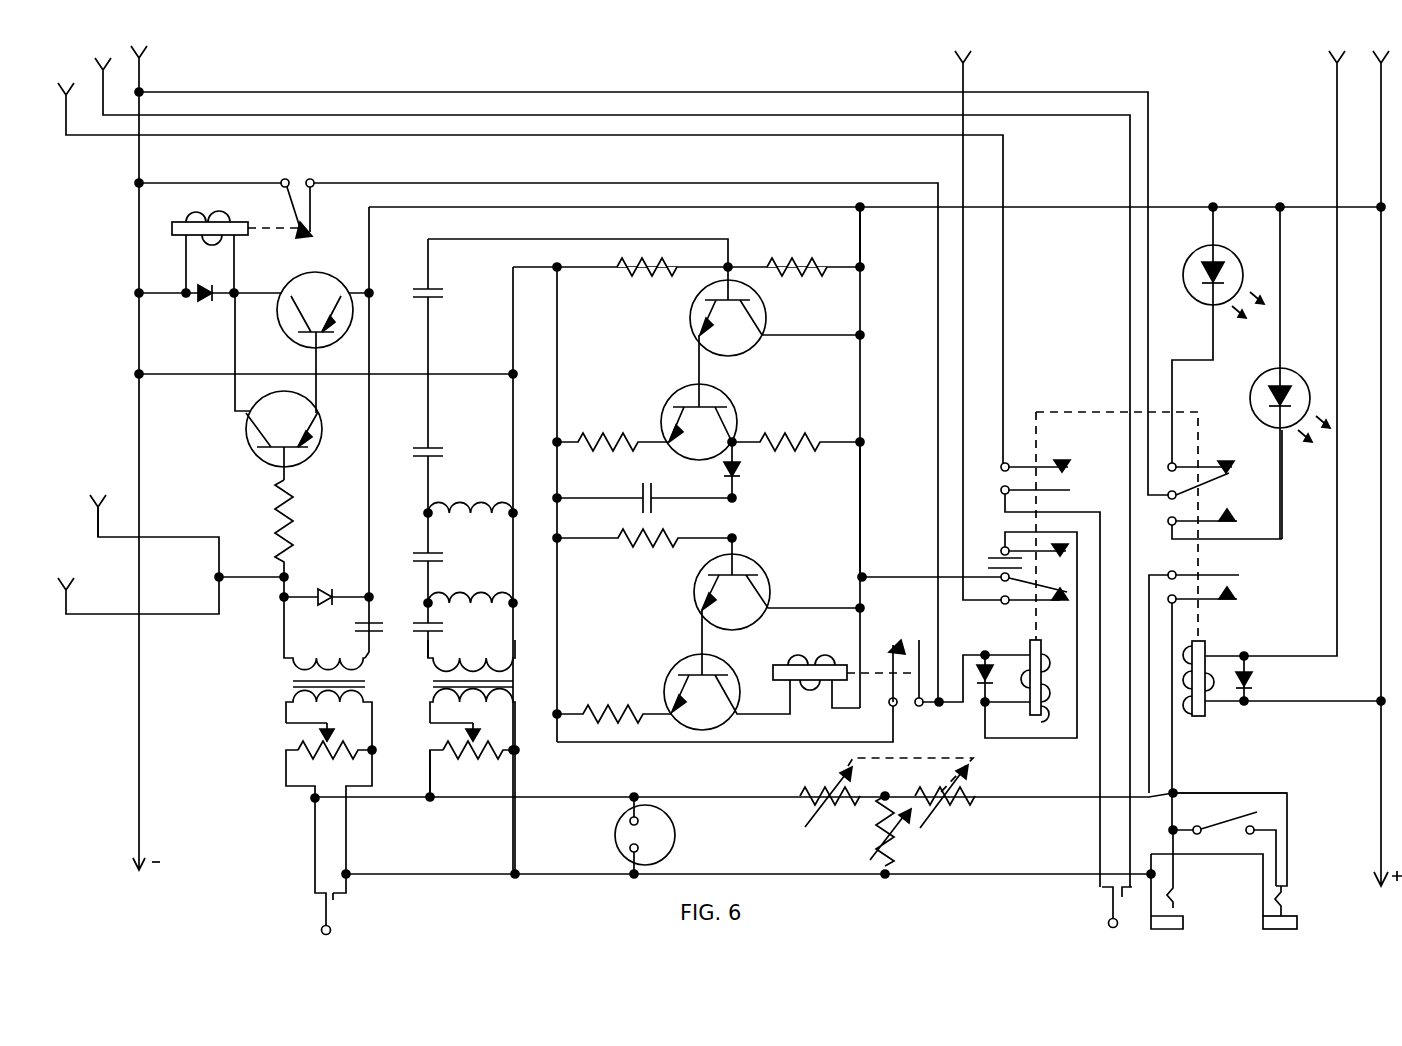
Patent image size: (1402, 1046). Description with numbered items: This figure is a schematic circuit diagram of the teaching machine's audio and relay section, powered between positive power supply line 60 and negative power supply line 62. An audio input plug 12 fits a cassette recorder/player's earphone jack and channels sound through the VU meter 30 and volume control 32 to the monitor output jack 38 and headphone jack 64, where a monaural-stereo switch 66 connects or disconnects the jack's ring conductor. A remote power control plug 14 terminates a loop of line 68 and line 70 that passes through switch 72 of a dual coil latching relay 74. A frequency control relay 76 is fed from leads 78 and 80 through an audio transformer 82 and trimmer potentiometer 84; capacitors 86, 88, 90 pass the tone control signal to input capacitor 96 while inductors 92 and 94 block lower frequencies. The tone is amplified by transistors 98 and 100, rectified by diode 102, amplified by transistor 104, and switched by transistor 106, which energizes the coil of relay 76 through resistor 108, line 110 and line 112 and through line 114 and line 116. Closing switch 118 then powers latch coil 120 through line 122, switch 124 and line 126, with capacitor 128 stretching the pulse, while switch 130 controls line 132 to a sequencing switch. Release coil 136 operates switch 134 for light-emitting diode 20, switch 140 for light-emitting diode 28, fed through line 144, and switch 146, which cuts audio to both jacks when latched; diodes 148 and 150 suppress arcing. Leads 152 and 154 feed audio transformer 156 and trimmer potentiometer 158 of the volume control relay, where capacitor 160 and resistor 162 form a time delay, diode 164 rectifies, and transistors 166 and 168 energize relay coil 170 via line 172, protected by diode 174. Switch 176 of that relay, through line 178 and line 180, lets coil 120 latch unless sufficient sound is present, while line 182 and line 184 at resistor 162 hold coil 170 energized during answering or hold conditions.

The audio input plug 12 is at (324, 918).
The remote power control plug 14 is at (1108, 910).
The light-emitting diode 20 is at (1220, 248).
The light-emitting diode 28 is at (1282, 370).
The VU meter 30 is at (614, 836).
The volume control 32 is at (836, 832).
The monitor output jack 38 is at (1180, 894).
The positive power supply line 60 is at (1382, 462).
The negative power supply line 62 is at (143, 467).
The headphone jack 64 is at (1295, 882).
The monaural-stereo switch 66 is at (1238, 816).
The line 68 is at (1130, 286).
The line 70 is at (1100, 842).
The switch 72 is at (1060, 474).
The dual coil latching relay 74 is at (1103, 388).
The frequency control relay 76 is at (806, 732).
The lead 78 is at (427, 760).
The lead 80 is at (515, 839).
The audio transformer 82 is at (425, 686).
The trimmer potentiometer 84 is at (430, 735).
The capacitor 86 is at (418, 618).
The capacitor 88 is at (418, 546).
The capacitor 90 is at (418, 438).
The inductor 92 is at (489, 586).
The inductor 94 is at (487, 498).
The input capacitor 96 is at (420, 308).
The transistor 98 is at (690, 312).
The transistor 100 is at (666, 400).
The diode 102 is at (744, 476).
The transistor 104 is at (761, 562).
The transistor 106 is at (716, 668).
The resistor 108 is at (627, 704).
The line 110 is at (557, 614).
The line 112 is at (500, 354).
The line 114 is at (864, 476).
The line 116 is at (920, 212).
The normally open switch 118 is at (906, 632).
The latch coil 120 is at (1042, 716).
The line 122 is at (1063, 740).
The switch 124 is at (1062, 580).
The line 126 is at (929, 576).
The capacitor 128 is at (1000, 560).
The switch 130 is at (1027, 599).
The line 132 is at (960, 424).
The switch 134 is at (1250, 438).
The release coil 136 is at (1204, 716).
The switch 140 is at (1260, 505).
The line 144 is at (263, 92).
The switch 146 is at (1254, 582).
The diode 148 is at (975, 692).
The diode 150 is at (1254, 676).
The lead 152 is at (286, 780).
The lead 154 is at (348, 852).
The audio transformer 156 is at (282, 684).
The trimmer potentiometer 158 is at (287, 744).
The capacitor 160 is at (402, 626).
The resistor 162 is at (272, 508).
The diode 164 is at (338, 560).
The transistor 166 is at (246, 437).
The transistor 168 is at (299, 342).
The relay coil 170 is at (215, 246).
The line 172 is at (188, 297).
The diode 174 is at (205, 302).
The switch 176 is at (297, 175).
The line 178 is at (550, 180).
The line 180 is at (242, 188).
The line 182 is at (701, 343).
The line 184 is at (100, 504).